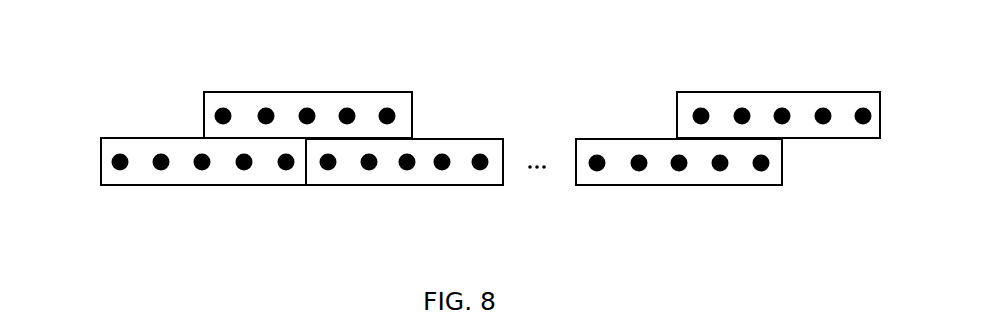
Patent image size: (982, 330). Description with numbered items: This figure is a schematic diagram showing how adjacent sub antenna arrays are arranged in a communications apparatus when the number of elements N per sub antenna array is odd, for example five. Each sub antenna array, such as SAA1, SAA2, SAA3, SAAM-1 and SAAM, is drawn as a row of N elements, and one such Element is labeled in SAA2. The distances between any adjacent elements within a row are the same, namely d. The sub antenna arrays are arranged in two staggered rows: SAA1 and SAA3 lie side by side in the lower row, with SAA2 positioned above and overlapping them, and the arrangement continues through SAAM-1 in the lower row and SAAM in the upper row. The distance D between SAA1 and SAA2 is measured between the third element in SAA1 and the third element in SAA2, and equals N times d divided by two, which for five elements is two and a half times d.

The first sub antenna array SAA1 is at (169, 141).
The second sub antenna array SAA2 is at (308, 83).
The third sub antenna array SAA3 is at (397, 194).
The (M-1)th sub antenna array SAAM-1 is at (669, 193).
The Mth sub antenna array SAAM is at (781, 87).
The element Element is at (445, 88).